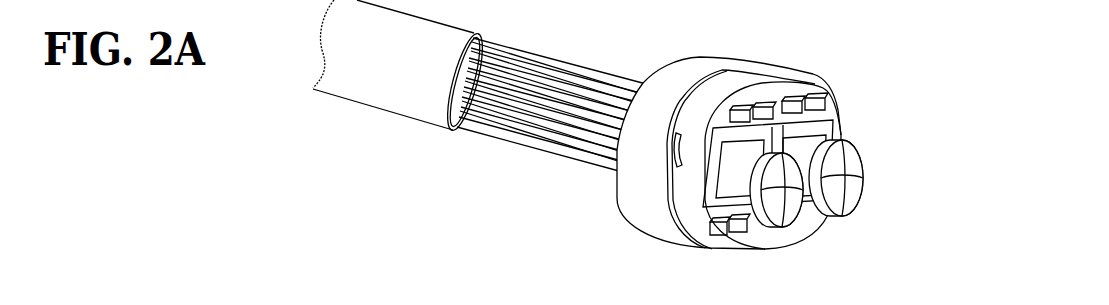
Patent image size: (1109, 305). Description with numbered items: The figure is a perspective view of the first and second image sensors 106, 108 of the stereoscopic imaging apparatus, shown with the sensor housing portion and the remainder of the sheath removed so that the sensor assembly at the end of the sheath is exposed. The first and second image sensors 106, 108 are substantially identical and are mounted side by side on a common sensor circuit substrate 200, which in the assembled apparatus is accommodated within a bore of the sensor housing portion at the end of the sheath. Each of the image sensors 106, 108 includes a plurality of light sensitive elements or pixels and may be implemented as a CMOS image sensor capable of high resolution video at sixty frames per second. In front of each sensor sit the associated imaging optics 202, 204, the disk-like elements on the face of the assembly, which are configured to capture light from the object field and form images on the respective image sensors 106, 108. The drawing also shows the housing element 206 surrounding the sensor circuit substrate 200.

The first image sensor 106 is at (740, 197).
The second image sensor 108 is at (817, 140).
The sensor circuit substrate 200 is at (803, 88).
The imaging optics 202 is at (786, 209).
The imaging optics 204 is at (848, 193).
The connector housing 206 is at (716, 54).